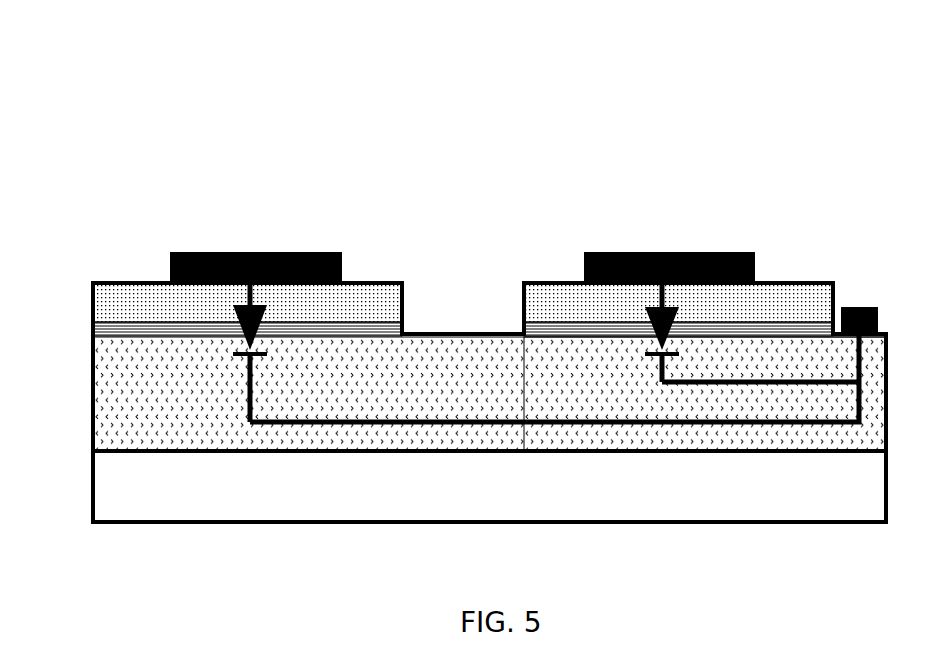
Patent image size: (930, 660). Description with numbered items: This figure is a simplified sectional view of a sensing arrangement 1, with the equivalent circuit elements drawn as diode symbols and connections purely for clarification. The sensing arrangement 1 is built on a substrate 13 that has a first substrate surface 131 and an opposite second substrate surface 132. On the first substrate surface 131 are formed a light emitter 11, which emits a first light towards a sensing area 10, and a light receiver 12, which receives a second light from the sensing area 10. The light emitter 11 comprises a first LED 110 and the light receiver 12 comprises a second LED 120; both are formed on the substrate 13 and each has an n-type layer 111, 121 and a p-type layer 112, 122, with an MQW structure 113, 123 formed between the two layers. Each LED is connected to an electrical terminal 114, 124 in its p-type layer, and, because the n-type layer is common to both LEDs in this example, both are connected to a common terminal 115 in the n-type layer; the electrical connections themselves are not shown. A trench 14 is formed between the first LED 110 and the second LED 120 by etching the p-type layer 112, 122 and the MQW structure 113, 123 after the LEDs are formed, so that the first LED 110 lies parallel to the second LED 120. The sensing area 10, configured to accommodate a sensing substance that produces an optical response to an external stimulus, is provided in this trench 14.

The sensing arrangement 1 is at (94, 90).
The sensing area 10 is at (475, 330).
The light emitter 11 is at (359, 238).
The light receiver 12 is at (774, 238).
The substrate 13 is at (328, 495).
The trench 14 is at (445, 322).
The first LED 110 is at (263, 310).
The n-type layer 111 is at (155, 415).
The p-type layer 112 is at (125, 302).
The MQW structure 113 is at (152, 330).
The electrical terminal 114 is at (278, 252).
The common terminal 115 is at (862, 307).
The second LED 120 is at (680, 312).
The n-type layer 121 is at (758, 438).
The p-type layer 122 is at (800, 310).
The MQW structure 123 is at (552, 328).
The electrical terminal 124 is at (673, 255).
The first substrate surface 131 is at (128, 448).
The second substrate surface 132 is at (635, 540).